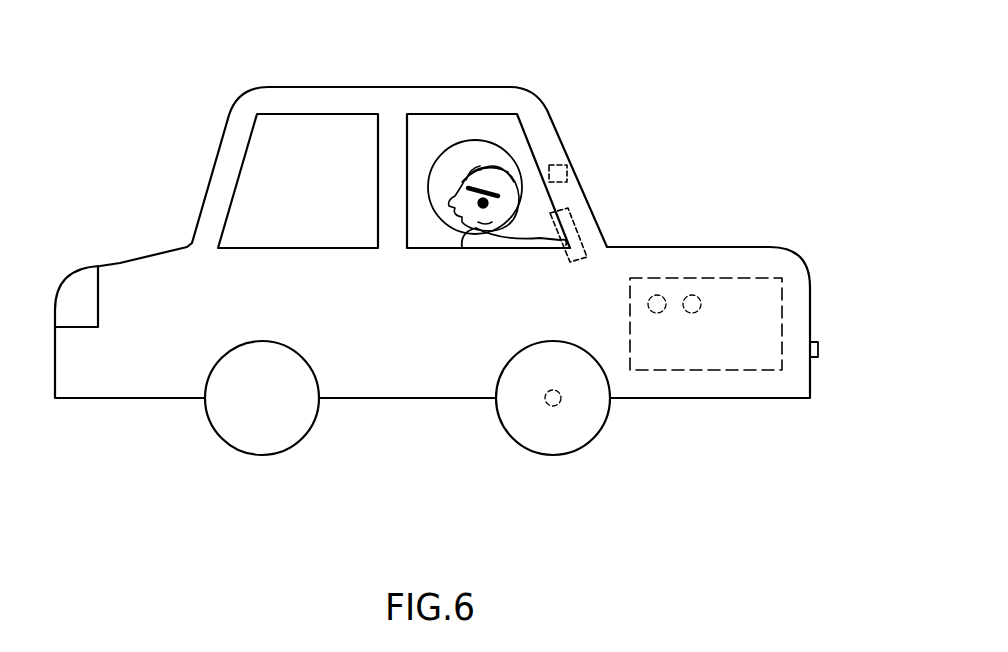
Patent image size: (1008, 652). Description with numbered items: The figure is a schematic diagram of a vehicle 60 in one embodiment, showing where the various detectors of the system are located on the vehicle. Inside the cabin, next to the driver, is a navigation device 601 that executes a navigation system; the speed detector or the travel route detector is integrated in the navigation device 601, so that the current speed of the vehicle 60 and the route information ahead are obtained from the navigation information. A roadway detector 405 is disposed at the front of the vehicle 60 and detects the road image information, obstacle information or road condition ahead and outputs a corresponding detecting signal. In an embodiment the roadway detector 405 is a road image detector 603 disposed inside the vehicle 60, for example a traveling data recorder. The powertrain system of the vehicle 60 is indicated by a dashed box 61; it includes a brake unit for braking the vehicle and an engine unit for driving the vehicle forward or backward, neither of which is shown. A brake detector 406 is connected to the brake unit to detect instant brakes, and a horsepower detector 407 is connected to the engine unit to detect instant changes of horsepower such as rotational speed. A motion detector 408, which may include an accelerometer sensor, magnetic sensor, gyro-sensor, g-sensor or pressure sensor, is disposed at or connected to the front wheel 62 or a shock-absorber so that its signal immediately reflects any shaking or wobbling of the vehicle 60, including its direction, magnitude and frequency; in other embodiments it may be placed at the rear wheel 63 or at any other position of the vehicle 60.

The vehicle 60 is at (252, 36).
The dashed box 61 is at (725, 278).
The front wheel 62 is at (505, 367).
The rear wheel 63 is at (312, 367).
The roadway detector 405 is at (818, 349).
The brake detector 406 is at (662, 312).
The horsepower detector 407 is at (700, 300).
The motion detector 408 is at (553, 406).
The navigation device 601 is at (578, 230).
The road image detector 603 is at (570, 177).